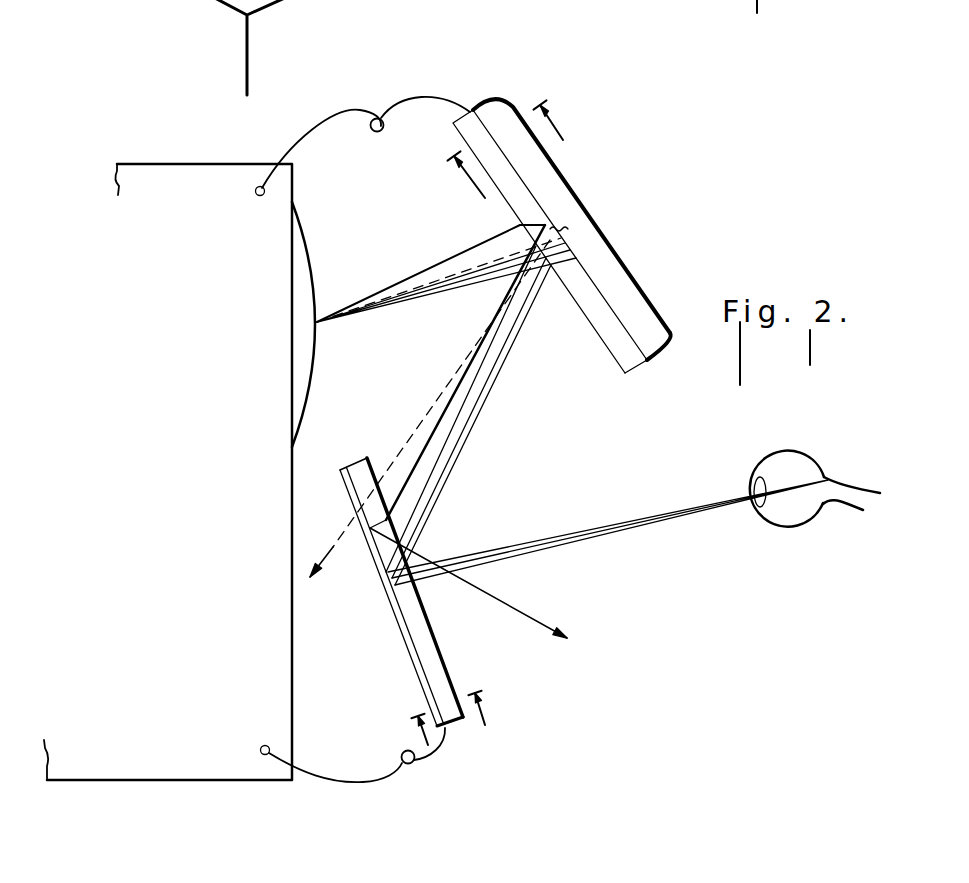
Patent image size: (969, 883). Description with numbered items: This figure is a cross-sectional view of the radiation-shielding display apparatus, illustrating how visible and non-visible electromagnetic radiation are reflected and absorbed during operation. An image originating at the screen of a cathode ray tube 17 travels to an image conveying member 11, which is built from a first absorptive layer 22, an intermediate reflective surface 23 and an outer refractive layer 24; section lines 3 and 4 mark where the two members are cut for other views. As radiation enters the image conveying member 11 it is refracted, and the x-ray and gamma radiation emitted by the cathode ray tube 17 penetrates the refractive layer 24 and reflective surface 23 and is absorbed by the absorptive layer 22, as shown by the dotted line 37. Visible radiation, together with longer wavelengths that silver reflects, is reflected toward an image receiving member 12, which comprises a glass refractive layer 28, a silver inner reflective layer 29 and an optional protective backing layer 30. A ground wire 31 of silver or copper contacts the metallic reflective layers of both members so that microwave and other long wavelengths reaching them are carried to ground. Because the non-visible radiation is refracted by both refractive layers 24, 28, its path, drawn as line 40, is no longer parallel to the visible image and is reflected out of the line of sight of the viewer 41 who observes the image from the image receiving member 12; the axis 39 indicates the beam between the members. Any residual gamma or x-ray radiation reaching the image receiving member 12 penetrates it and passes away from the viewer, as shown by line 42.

The section line 3- 3 is at (499, 140).
The section line 4- 4 is at (443, 702).
The image conveying member 11 is at (585, 234).
The image receiving member 12 is at (410, 588).
The cathode ray tube 17 is at (312, 413).
The first absorptive layer 22 is at (673, 336).
The intermediate reflective surface 23 is at (648, 362).
The outer refractive layer 24 is at (627, 374).
The refractive layer 28 is at (362, 458).
The inner reflective layer 29 is at (343, 466).
The backing layer 30 is at (345, 476).
The ground wire 31 is at (337, 116).
The dotted line 37 is at (436, 280).
The reflected beam axis 39 is at (448, 382).
The line 40 is at (469, 250).
The viewer 41 is at (786, 524).
The line 42 is at (340, 553).